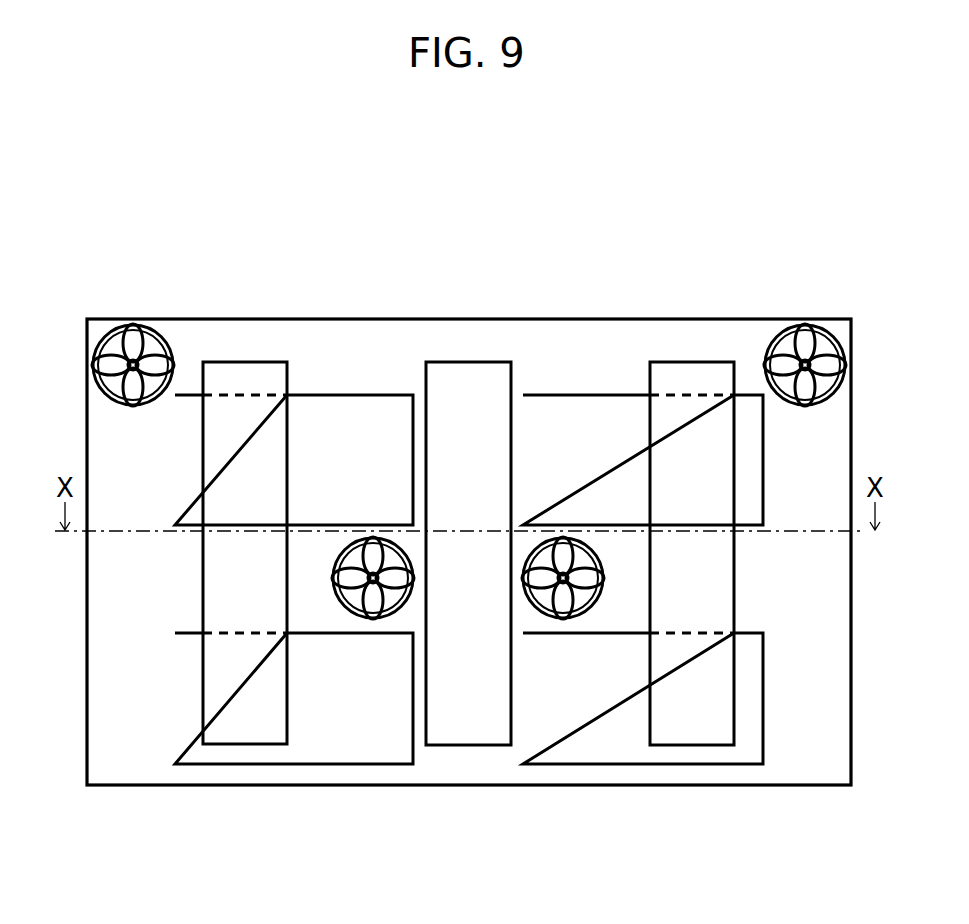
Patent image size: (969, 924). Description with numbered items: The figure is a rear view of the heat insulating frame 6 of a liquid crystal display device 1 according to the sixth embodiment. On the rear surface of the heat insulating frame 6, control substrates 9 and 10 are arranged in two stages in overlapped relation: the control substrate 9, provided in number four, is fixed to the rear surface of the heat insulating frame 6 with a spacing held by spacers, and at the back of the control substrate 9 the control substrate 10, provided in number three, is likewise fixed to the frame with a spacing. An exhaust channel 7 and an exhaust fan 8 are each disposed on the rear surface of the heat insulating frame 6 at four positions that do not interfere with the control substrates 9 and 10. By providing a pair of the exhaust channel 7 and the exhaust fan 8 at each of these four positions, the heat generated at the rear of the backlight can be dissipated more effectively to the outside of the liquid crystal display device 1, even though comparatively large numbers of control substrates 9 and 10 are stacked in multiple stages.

The liquid crystal display device 1 is at (163, 172).
The heat insulating frame 6 is at (468, 320).
The exhaust channel 7 is at (100, 326).
The exhaust fan 8 is at (158, 338).
The control substrate 9 is at (336, 395).
The control substrate 10 is at (250, 362).